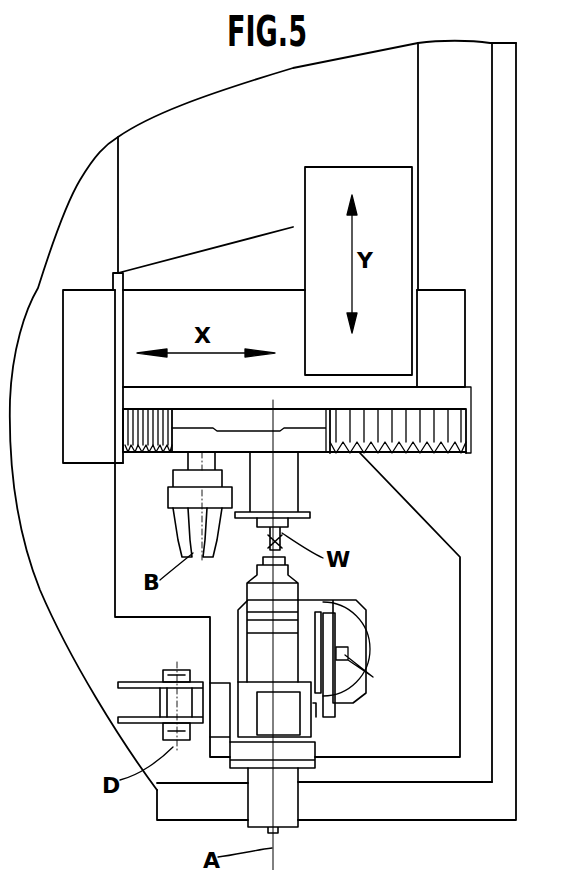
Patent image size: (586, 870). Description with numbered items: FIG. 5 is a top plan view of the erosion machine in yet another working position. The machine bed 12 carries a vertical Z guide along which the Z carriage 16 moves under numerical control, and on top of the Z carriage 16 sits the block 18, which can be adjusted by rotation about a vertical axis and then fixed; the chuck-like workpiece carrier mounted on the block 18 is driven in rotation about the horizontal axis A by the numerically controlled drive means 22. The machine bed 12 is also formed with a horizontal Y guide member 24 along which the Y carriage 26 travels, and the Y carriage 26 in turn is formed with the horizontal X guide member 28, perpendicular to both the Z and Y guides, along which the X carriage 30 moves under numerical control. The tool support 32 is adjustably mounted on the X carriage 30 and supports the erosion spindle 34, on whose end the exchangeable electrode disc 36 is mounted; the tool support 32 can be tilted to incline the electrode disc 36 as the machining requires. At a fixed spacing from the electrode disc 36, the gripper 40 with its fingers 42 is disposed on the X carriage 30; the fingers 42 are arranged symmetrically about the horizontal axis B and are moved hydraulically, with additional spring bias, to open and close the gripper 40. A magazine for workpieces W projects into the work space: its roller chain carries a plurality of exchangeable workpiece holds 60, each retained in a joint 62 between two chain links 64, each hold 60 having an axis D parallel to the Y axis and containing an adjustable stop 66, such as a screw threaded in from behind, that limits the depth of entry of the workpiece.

The machine bed 12 is at (506, 508).
The Z carriage 16 is at (446, 690).
The block 18 is at (340, 633).
The drive means 22 is at (293, 835).
The Y guide member 24 is at (403, 97).
The Y carriage 26 is at (383, 187).
The X guide member 28 is at (386, 387).
The X carriage 30 is at (296, 417).
The tool support 32 is at (313, 447).
The erosion spindle 34 is at (293, 492).
The electrode disc 36 is at (308, 515).
The gripper 40 is at (170, 497).
The fingers 42 is at (177, 528).
The workpiece hold 60 is at (163, 675).
The joint 62 is at (167, 702).
The chain links 64 is at (120, 685).
The adjustable stop 66 is at (163, 733).